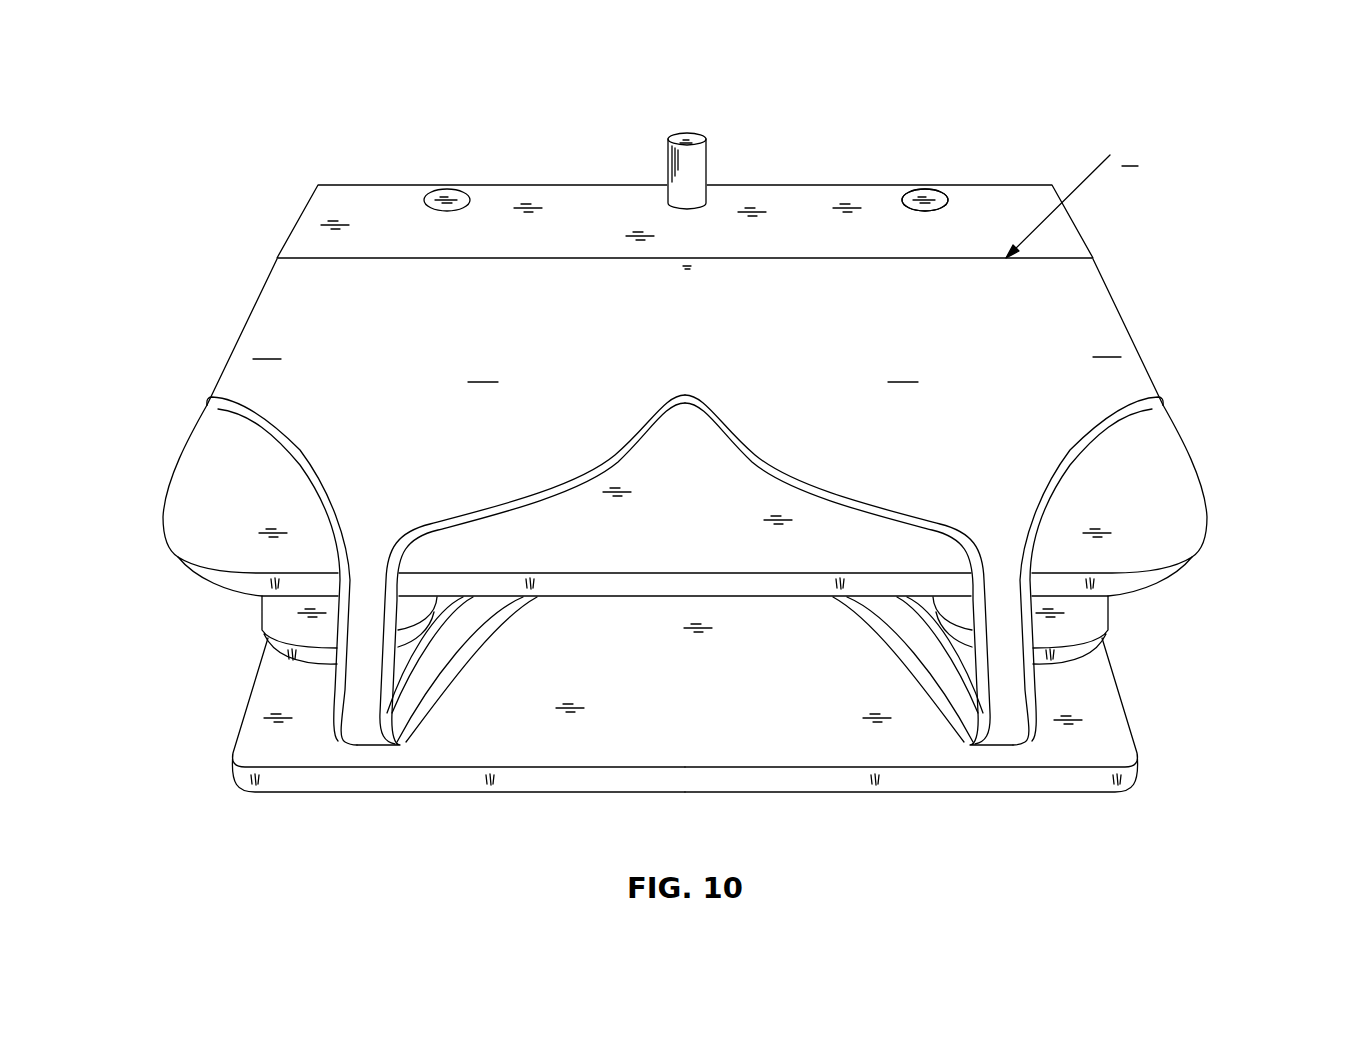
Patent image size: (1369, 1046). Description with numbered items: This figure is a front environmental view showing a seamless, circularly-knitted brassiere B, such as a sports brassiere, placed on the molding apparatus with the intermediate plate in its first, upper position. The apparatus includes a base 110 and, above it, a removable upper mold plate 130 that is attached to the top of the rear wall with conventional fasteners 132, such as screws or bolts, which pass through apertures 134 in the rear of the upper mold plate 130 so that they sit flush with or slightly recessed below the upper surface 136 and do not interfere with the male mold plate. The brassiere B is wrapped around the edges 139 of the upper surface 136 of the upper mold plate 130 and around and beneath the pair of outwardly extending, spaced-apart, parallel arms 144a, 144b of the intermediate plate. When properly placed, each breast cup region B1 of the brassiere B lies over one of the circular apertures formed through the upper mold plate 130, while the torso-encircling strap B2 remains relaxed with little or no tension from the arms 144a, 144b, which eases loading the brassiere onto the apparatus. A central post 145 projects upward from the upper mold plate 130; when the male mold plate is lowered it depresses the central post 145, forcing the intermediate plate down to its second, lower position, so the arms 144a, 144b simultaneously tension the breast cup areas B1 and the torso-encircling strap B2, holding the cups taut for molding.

The base 110 is at (1068, 779).
The upper mold plate 130 is at (302, 214).
The fasteners 132 is at (928, 192).
The apertures 134 is at (948, 199).
The upper surface 136 is at (1133, 487).
The edges 139 is at (180, 468).
The arm 144a is at (273, 615).
The arm 144b is at (1095, 613).
The central post 145 is at (703, 163).
The brassiere B is at (1072, 201).
The breast cup regions B1 is at (685, 552).
The torso-encircling strap B2 is at (685, 539).